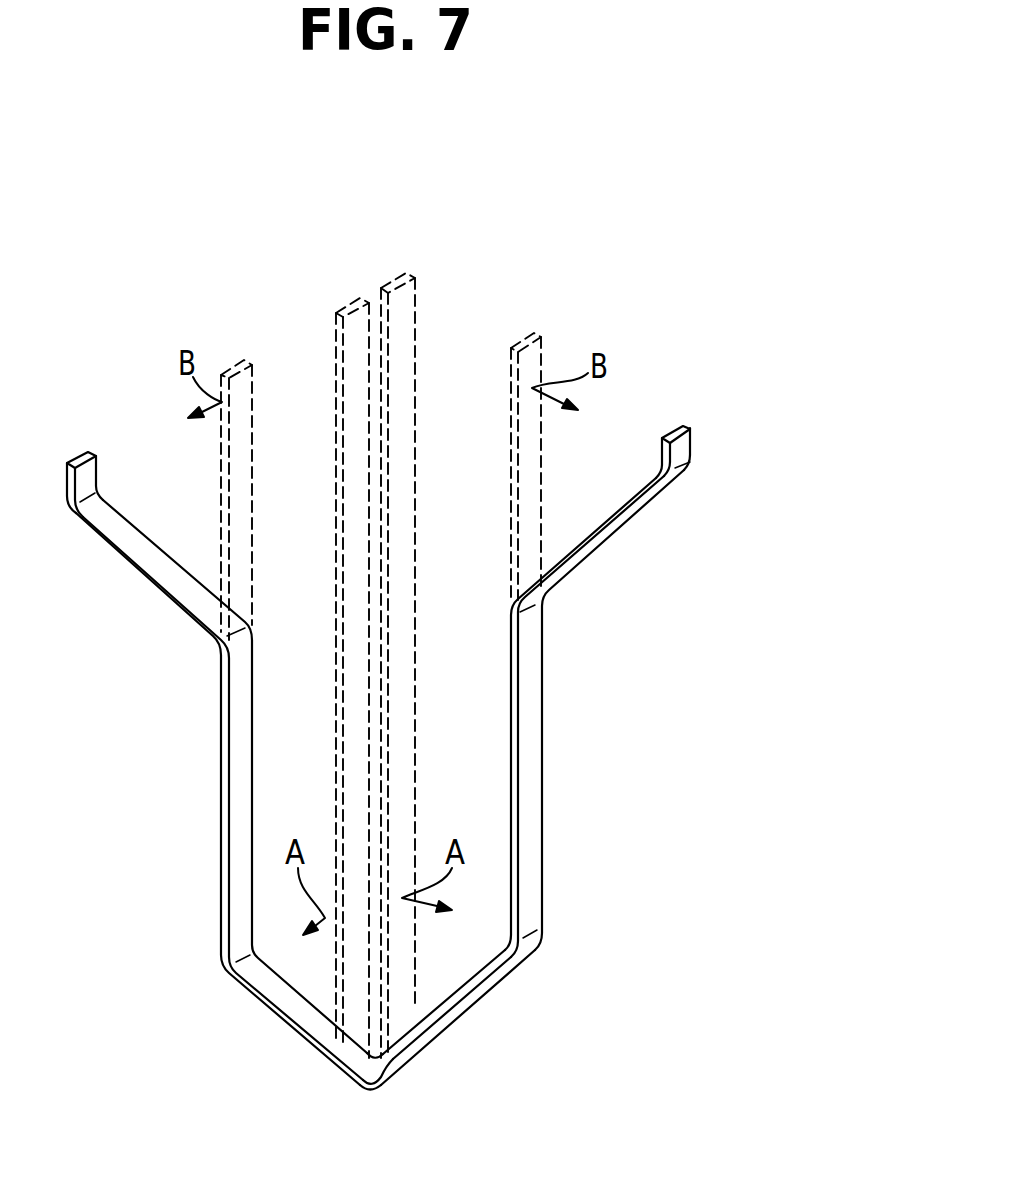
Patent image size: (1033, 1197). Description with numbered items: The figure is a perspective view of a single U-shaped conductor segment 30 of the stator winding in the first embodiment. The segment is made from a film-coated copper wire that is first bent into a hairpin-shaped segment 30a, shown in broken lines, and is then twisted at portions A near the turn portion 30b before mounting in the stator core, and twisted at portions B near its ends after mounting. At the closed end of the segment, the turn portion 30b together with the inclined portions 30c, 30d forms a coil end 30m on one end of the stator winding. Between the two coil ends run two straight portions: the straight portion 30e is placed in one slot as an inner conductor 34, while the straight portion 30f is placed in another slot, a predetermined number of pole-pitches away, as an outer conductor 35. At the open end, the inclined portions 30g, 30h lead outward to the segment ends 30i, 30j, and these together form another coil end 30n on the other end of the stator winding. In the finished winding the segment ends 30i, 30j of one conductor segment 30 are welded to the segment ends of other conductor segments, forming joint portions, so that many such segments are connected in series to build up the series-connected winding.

The conductor segment 30 is at (827, 421).
The hairpin-shaped segment 30a is at (405, 735).
The turn portion 30b is at (397, 1068).
The inclined portion 30c is at (293, 1005).
The inclined portion 30d is at (470, 983).
The straight portion 30e is at (173, 798).
The straight portion 30f is at (576, 773).
The inclined portion 30g is at (138, 548).
The inclined portion 30h is at (612, 535).
The segment end 30i is at (90, 478).
The segment end 30j is at (685, 447).
The coil end 30m is at (539, 969).
The coil end 30n is at (687, 502).
The inner conductor 34 is at (238, 802).
The outer conductor 35 is at (540, 747).